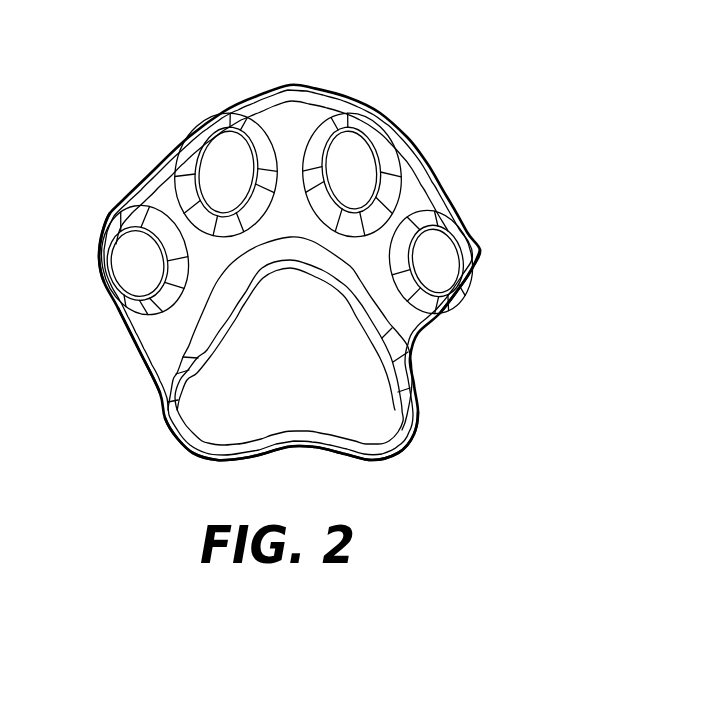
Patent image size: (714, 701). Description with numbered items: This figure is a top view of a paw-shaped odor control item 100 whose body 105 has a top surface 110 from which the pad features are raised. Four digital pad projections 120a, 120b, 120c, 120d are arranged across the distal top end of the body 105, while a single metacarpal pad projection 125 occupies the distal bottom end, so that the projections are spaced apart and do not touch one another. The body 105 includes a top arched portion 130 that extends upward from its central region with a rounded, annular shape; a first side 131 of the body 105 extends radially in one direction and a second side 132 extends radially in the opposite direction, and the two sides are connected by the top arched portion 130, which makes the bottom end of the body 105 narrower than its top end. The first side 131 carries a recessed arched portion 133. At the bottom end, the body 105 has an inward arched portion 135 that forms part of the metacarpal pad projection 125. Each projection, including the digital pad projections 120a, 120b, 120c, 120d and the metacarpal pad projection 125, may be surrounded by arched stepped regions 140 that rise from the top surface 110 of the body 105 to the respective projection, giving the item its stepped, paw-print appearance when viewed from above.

The paw-shaped odor control item 100 is at (413, 462).
The body 105 is at (160, 416).
The top surface 110 is at (408, 327).
The digital pad projection 120a is at (120, 211).
The digital pad projection 120b is at (225, 113).
The digital pad projection 120c is at (358, 113).
The digital pad projection 120d is at (446, 211).
The metacarpal pad projection 125 is at (303, 380).
The top arched portion 130 is at (296, 102).
The first side 131 is at (84, 249).
The second side 132 is at (480, 298).
The recessed arched portion 133 is at (143, 390).
The inward arched portion 135 is at (294, 468).
The arched stepped regions 140 is at (187, 342).